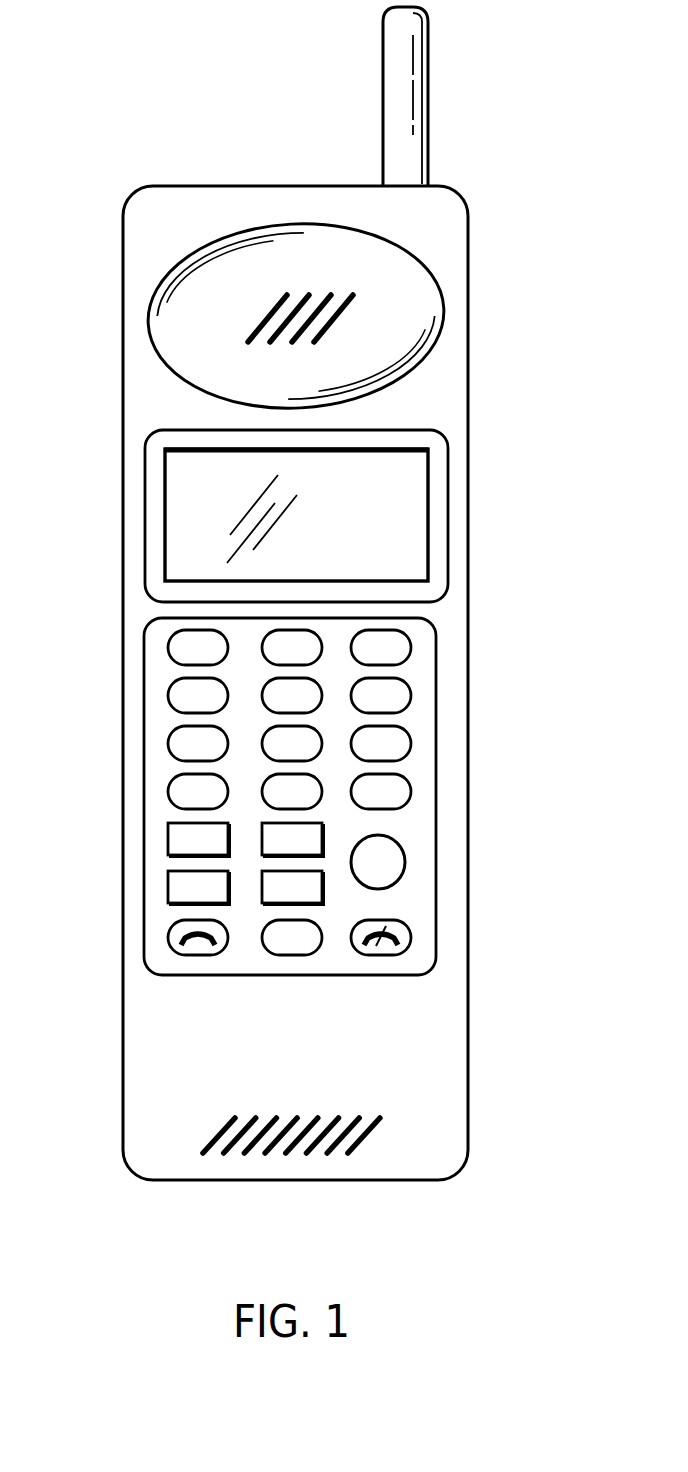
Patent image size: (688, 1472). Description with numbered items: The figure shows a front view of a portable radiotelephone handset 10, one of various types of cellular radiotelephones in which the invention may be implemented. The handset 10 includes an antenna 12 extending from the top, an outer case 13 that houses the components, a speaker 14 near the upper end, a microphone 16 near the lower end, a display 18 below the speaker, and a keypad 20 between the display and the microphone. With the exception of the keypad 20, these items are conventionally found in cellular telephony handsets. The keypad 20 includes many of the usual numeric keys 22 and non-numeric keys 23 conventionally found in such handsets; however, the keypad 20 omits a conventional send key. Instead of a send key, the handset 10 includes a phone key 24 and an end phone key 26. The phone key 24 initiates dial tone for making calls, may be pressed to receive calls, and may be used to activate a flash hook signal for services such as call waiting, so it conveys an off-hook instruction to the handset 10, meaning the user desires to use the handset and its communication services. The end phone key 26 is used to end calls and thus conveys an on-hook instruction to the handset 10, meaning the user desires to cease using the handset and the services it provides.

The portable radiotelephone handset 10 is at (300, 634).
The antenna 12 is at (412, 118).
The outer case 13 is at (453, 400).
The speaker 14 is at (410, 288).
The microphone 16 is at (295, 1148).
The display 18 is at (185, 518).
The keypad 20 is at (289, 812).
The numeric keys 22 is at (268, 631).
The non-numeric keys 23 is at (407, 863).
The phone key 24 is at (185, 955).
The end phone key 26 is at (397, 952).